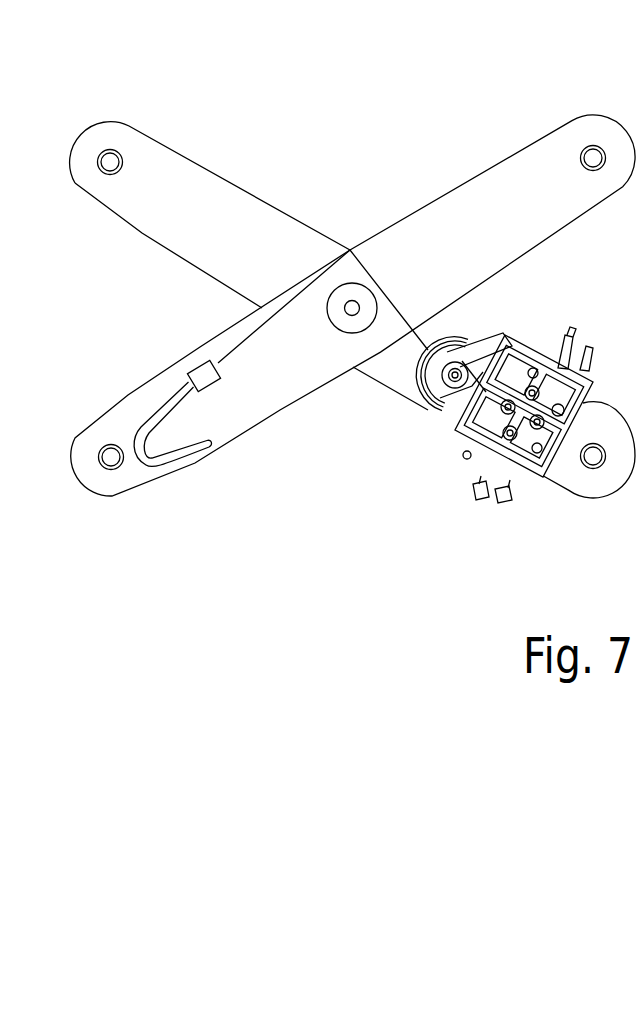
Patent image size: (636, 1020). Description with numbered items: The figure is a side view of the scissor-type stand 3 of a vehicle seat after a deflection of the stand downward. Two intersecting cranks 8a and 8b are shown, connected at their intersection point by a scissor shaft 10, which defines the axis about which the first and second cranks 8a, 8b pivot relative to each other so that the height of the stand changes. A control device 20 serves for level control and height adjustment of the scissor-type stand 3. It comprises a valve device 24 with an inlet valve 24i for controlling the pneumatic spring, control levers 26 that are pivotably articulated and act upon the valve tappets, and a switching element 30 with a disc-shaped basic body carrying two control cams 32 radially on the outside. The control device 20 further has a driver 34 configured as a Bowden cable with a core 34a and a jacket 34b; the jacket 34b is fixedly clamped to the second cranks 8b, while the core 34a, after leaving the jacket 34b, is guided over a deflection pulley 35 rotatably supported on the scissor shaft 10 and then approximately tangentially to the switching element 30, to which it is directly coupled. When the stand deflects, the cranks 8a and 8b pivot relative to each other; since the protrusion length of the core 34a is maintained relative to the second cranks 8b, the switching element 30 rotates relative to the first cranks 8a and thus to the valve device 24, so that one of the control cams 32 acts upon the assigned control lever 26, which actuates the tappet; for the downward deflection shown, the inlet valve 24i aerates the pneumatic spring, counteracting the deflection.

The scissor-type stand 3 is at (340, 213).
The first cranks 8a is at (185, 178).
The second cranks 8b is at (538, 178).
The scissor shaft 10 is at (345, 310).
The control device 20 is at (465, 318).
The valve device 24 is at (488, 499).
The inlet valve 24i is at (550, 382).
The control lever 26 is at (552, 382).
The switching element 30 is at (453, 367).
The control cams 32 is at (497, 360).
The driver 34 is at (281, 422).
The core 34a is at (397, 310).
The jacket 34b is at (194, 453).
The deflection pulley 35 is at (340, 292).